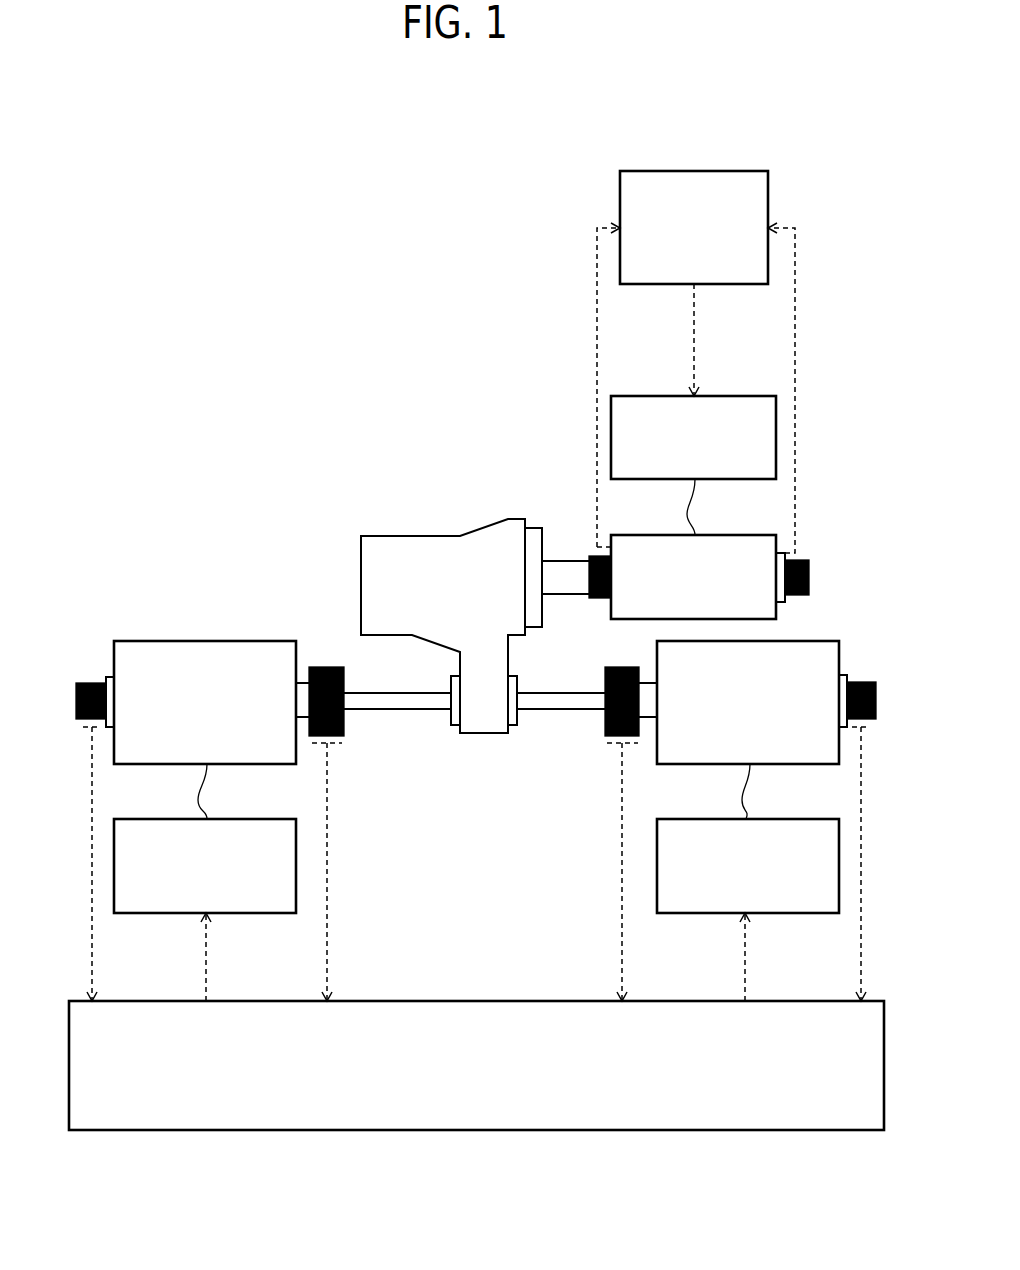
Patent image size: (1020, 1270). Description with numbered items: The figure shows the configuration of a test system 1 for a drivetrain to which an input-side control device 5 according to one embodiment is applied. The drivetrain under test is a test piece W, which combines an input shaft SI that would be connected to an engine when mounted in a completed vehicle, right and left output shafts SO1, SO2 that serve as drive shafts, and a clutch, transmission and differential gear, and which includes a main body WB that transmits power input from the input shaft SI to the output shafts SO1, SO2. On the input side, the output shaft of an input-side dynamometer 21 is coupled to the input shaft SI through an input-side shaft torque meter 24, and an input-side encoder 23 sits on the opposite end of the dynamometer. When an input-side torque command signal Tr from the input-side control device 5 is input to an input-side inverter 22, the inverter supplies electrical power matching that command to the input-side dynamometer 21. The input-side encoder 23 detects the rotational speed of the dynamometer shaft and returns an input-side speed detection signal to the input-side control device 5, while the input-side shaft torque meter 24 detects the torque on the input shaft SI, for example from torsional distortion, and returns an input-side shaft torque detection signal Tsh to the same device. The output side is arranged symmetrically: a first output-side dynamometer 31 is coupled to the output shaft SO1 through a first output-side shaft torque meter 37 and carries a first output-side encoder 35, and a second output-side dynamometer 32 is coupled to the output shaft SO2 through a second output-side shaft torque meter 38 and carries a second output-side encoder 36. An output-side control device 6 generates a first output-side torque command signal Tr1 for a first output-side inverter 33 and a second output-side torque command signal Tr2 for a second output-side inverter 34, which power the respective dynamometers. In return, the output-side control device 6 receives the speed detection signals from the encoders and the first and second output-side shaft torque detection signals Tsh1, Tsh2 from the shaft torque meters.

The test system 1 is at (157, 181).
The input-side control device 5 is at (731, 171).
The output-side control device 6 is at (462, 1001).
The input-side dynamometer 21 is at (740, 535).
The input-side inverter 22 is at (740, 396).
The input-side encoder 23 is at (803, 553).
The input-side shaft torque meter 24 is at (590, 549).
The first output-side dynamometer 31 is at (243, 765).
The second output-side dynamometer 32 is at (785, 765).
The first output-side inverter 33 is at (145, 915).
The second output-side inverter 34 is at (785, 915).
The first output-side encoder 35 is at (83, 683).
The second output-side encoder 36 is at (867, 682).
The first output-side shaft torque meter 37 is at (340, 745).
The second output-side shaft torque meter 38 is at (612, 745).
The test piece W is at (389, 482).
The main body WB is at (436, 536).
The input shaft SI is at (560, 597).
The output shaft SO1 is at (402, 711).
The output shaft SO2 is at (538, 711).
The input-side shaft torque detection signal Tsh is at (574, 385).
The input-side torque command signal Tr is at (708, 340).
The first output-side torque command signal Tr1 is at (227, 957).
The second output-side torque command signal Tr2 is at (716, 957).
The first output-side shaft torque detection signal Tsh1 is at (355, 872).
The second output-side shaft torque detection signal Tsh2 is at (592, 872).